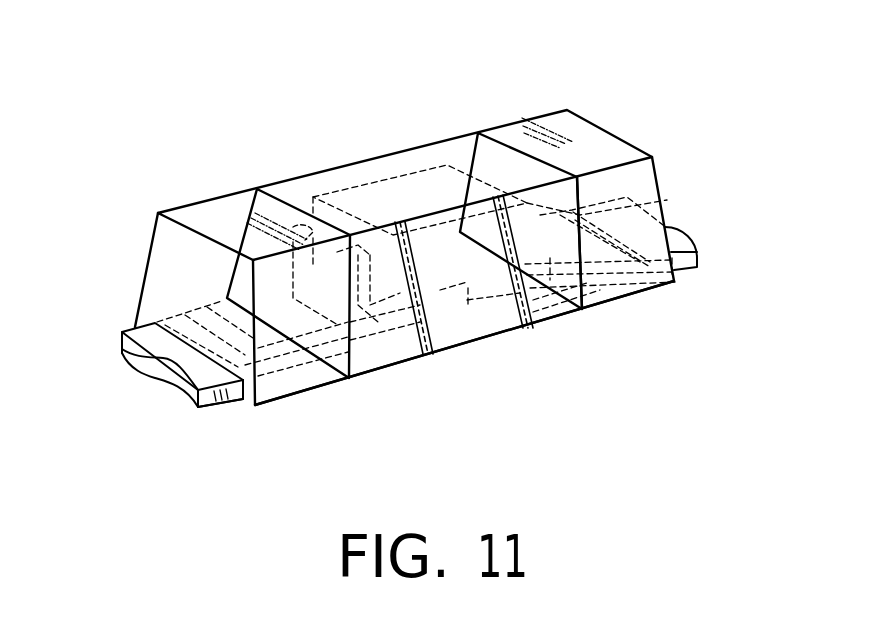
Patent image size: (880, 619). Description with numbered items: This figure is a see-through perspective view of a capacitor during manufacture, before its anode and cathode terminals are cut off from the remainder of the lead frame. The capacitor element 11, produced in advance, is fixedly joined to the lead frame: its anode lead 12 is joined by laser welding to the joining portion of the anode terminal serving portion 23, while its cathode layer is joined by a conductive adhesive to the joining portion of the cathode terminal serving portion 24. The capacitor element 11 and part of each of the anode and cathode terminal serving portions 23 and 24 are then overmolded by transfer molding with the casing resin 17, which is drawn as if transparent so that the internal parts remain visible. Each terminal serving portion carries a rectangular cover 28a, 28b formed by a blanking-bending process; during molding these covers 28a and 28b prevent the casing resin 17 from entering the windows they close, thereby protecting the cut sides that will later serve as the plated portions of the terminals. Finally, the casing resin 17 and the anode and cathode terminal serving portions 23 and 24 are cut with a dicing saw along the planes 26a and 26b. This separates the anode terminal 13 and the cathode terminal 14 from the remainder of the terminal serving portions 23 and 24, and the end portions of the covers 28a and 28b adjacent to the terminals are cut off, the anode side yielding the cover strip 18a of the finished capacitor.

The capacitor element 11 is at (412, 197).
The anode lead 12 is at (330, 243).
The anode terminal 13 is at (406, 357).
The cathode terminal 14 is at (554, 314).
The casing resin 17 is at (468, 327).
The cover strip 18a is at (287, 303).
The anode terminal serving portion 23 is at (235, 395).
The cathode terminal serving portion 24 is at (676, 243).
The cutting plane 26a is at (282, 200).
The cutting plane 26b is at (498, 145).
The rectangular cover 28a is at (212, 303).
The rectangular cover 28b is at (558, 240).